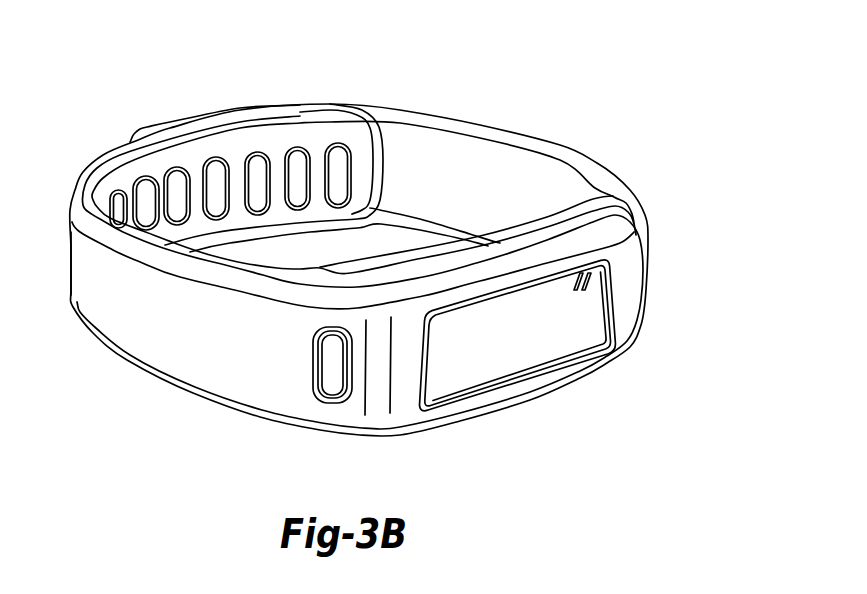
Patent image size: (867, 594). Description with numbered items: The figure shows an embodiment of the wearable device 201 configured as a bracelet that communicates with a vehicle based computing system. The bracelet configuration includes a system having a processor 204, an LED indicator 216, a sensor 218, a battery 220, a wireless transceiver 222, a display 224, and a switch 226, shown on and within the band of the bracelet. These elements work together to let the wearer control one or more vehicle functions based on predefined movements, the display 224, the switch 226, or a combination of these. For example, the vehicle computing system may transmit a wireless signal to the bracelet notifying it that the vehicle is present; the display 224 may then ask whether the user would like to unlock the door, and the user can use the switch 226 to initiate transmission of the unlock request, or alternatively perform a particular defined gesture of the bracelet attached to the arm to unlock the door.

The wearable device 201 is at (633, 75).
The processor 204 is at (575, 228).
The LED indicator 216 is at (593, 280).
The sensor 218 is at (280, 390).
The battery 220 is at (523, 230).
The wireless transceiver 222 is at (207, 365).
The display 224 is at (543, 347).
The switch 226 is at (330, 385).